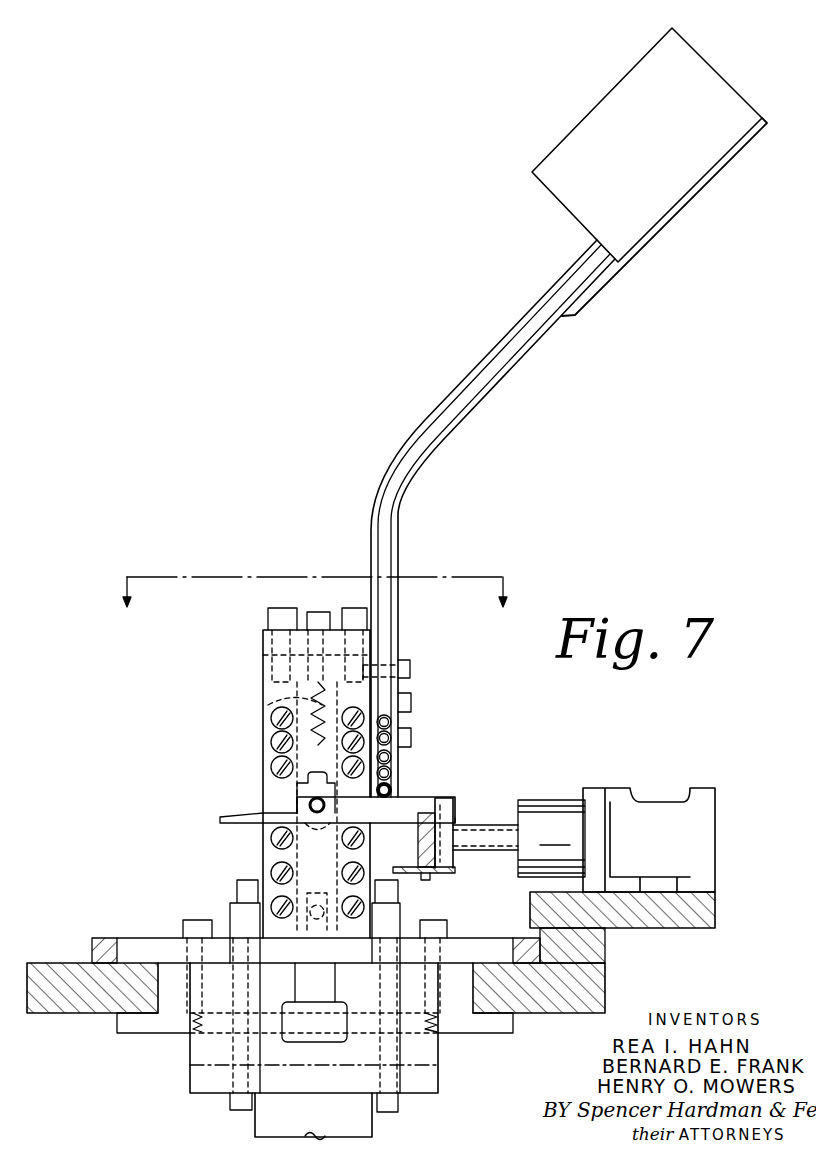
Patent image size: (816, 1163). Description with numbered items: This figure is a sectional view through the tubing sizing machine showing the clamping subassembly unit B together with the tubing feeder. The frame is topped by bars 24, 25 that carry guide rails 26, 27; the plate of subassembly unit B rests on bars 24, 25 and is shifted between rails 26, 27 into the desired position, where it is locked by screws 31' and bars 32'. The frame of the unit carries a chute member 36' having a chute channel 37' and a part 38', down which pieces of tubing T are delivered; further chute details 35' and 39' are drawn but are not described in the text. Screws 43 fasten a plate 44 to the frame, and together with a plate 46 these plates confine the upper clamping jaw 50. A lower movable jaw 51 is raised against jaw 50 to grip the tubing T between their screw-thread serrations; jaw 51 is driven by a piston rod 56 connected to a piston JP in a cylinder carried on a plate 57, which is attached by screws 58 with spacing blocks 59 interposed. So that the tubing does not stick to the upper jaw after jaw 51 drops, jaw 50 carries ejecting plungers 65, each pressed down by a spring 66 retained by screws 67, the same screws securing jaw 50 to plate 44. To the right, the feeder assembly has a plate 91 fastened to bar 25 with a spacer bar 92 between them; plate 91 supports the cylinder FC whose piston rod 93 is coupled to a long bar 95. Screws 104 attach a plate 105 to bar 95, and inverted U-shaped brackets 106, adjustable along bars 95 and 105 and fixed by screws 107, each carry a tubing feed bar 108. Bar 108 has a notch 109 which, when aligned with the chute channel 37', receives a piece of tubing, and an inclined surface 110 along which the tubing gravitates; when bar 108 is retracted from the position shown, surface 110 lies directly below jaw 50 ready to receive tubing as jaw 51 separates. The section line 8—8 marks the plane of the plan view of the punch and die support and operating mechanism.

The bar 24 is at (75, 945).
The bar 25 is at (605, 990).
The rail 26 is at (110, 938).
The rail 27 is at (535, 963).
The screws 31' is at (329, 965).
The bars 32' is at (153, 1044).
The lugs on lever 35' is at (411, 703).
The chute member 36' is at (493, 521).
The chute channel 37' is at (493, 518).
The chute part 38' is at (639, 145).
The handle strip 39' is at (664, 217).
The screws 43 is at (350, 608).
The plate 44 is at (275, 643).
The plate 46 is at (277, 687).
The upper clamping jaw 50 is at (297, 787).
The lower movable jaw 51 is at (297, 855).
The piston rod 56 is at (337, 1002).
The plate 57 is at (438, 1082).
The screws 58 is at (398, 1107).
The spacing blocks 59 is at (438, 1062).
The ejecting plungers 65 is at (297, 755).
The spring 66 is at (280, 700).
The screws 67 is at (326, 600).
The plate 91 is at (717, 922).
The spacer bar 92 is at (605, 955).
The piston rod 93 is at (497, 823).
The long bar 95 is at (427, 797).
The screws 104 is at (433, 878).
The plate 105 is at (457, 868).
The inverted U-shaped brackets 106 is at (443, 798).
The screws 107 is at (445, 818).
The tubing feed bar 108 is at (388, 823).
The notch 109 is at (309, 806).
The inclined surface 110 is at (258, 813).
The subassembly unit B is at (226, 653).
The tubing T is at (376, 810).
The cylinder FC is at (652, 802).
The piston JP is at (313, 1116).
The section line 8— 8 is at (313, 608).